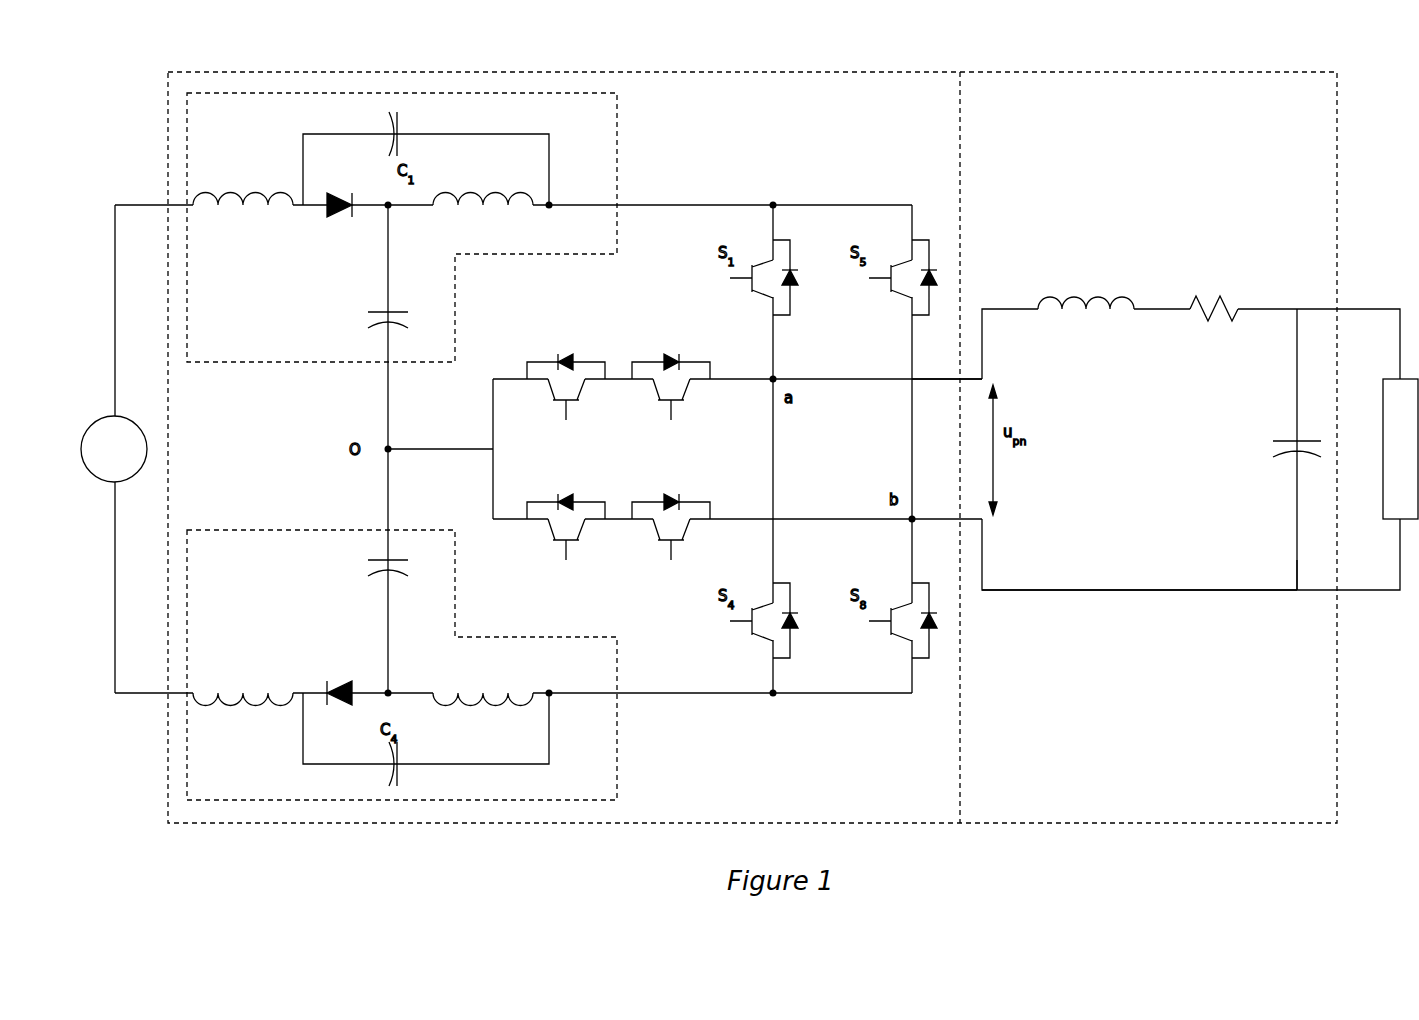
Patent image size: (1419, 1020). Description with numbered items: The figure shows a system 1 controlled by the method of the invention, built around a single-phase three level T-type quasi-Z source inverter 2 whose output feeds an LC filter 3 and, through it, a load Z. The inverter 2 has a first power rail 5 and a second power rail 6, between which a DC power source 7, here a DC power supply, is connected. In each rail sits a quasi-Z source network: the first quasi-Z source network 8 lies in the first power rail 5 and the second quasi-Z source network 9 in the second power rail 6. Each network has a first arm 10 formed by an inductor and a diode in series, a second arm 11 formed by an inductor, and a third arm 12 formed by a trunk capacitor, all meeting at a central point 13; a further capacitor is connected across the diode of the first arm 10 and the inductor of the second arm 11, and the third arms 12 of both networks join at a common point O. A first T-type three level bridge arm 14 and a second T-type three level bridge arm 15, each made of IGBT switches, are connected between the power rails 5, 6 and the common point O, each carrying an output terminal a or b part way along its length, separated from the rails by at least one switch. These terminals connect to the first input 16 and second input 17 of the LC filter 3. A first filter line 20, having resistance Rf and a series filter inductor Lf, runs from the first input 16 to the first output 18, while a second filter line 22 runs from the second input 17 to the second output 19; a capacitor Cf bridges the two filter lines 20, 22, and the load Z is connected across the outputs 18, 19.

The system 1 is at (120, 130).
The single-phase three level T-type quasi-Z source inverter 2 is at (706, 74).
The LC filter 3 is at (998, 72).
The first power rail 5 is at (650, 200).
The second power rail 6 is at (662, 700).
The DC power source 7 is at (96, 449).
The first quasi-Z source network 8 is at (623, 154).
The second quasi-Z source network 9 is at (620, 760).
The first arm 10 is at (287, 170).
The second arm 11 is at (440, 163).
The third arm 12 is at (374, 285).
The central point 13 is at (383, 197).
The first T-type three level bridge arm 14 is at (740, 348).
The second T-type three level bridge arm 15 is at (940, 352).
The first input 16 is at (993, 290).
The second input 17 is at (998, 603).
The first output 18 is at (1292, 300).
The second output 19 is at (1287, 597).
The first filter line 20 is at (1155, 258).
The second filter line 22 is at (1151, 597).